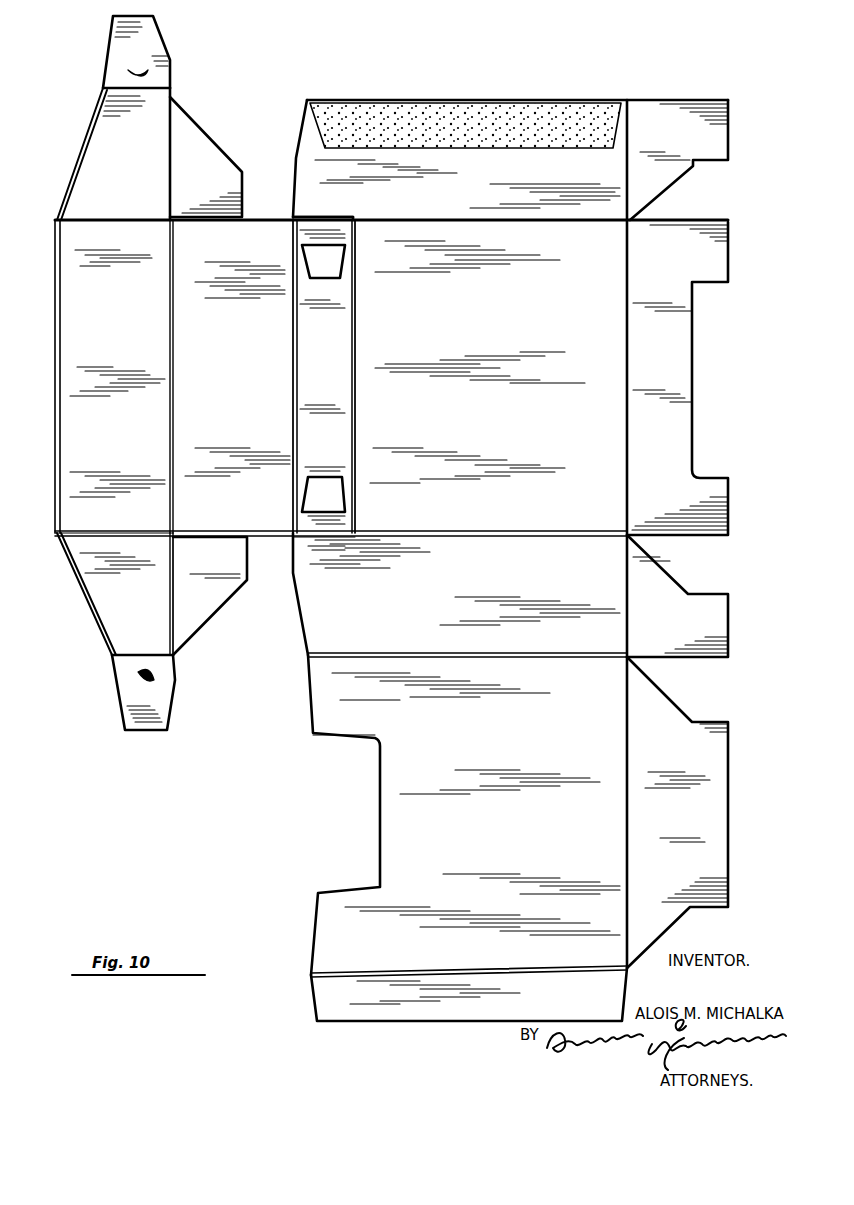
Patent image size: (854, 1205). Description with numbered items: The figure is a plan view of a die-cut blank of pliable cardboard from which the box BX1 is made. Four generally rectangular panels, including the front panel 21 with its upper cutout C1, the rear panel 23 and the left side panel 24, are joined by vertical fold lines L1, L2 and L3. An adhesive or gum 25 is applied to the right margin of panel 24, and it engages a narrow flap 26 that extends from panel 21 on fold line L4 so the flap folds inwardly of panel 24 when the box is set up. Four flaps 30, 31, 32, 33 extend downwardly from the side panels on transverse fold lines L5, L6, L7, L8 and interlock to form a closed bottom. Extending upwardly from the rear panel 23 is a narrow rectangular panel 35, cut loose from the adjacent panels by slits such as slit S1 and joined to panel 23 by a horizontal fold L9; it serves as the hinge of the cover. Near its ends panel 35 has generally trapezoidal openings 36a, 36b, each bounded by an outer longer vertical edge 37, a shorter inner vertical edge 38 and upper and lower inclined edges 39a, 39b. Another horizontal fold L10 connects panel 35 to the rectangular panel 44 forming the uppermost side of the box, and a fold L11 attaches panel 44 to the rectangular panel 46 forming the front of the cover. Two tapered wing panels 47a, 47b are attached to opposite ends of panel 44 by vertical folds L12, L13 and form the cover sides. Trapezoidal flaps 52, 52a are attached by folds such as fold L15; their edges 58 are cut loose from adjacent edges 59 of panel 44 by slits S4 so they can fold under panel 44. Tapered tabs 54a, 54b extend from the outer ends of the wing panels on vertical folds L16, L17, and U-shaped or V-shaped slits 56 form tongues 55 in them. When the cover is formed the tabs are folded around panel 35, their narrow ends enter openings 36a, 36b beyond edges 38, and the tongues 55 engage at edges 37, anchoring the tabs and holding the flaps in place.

The panel 21 is at (408, 830).
The panel 23 is at (600, 436).
The panel 24 is at (308, 160).
The adhesive or gum 25 is at (537, 101).
The narrow flap 26 is at (400, 1012).
The flap 30 is at (714, 798).
The flap 31 is at (717, 616).
The flap 32 is at (712, 492).
The flap 33 is at (716, 144).
The narrow rectangular panel 35 is at (296, 369).
The trapezoidal opening 36a is at (332, 482).
The trapezoidal opening 36b is at (340, 263).
The outer longer vertical edge 37 is at (302, 249).
The shorter inner vertical edge 38 is at (326, 272).
The upper inclined edge 39a is at (311, 270).
The lower inclined edge 39b is at (342, 270).
The rectangular panel 44 is at (280, 538).
The rectangular panel 46 is at (83, 433).
The tapered wing panel 47a is at (112, 622).
The tapered wing panel 47b is at (100, 164).
The trapezoidal flap 52 is at (348, 205).
The trapezoidal flap 52a is at (194, 612).
The tapered tab 54a is at (160, 710).
The tapered tab 54b is at (126, 46).
The tongue 55 is at (147, 64).
The slit 56 is at (126, 72).
The edge 58 is at (230, 199).
The edge 59 is at (258, 220).
The slit S1 is at (338, 545).
The slit S4 is at (206, 223).
The upper cutout C1 is at (378, 765).
The box BX1 is at (355, 833).
The vertical fold line L1 is at (580, 658).
The vertical fold line L2 is at (596, 539).
The vertical fold line L3 is at (596, 226).
The fold line L4 is at (537, 972).
The horizontal fold line L5 is at (632, 880).
The horizontal fold line L6 is at (632, 566).
The horizontal fold line L7 is at (630, 339).
The horizontal fold line L8 is at (635, 186).
The horizontal fold L9 is at (354, 398).
The horizontal fold L10 is at (295, 336).
The fold L11 is at (172, 438).
The vertical fold L12 is at (88, 540).
The vertical fold L13 is at (88, 222).
The fold L15 is at (172, 154).
The vertical fold L16 is at (160, 654).
The vertical fold L17 is at (150, 93).